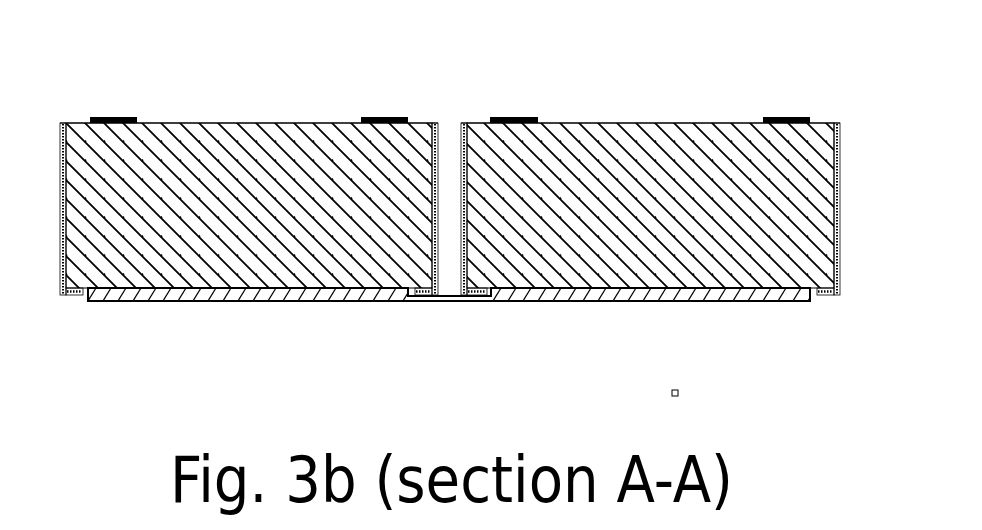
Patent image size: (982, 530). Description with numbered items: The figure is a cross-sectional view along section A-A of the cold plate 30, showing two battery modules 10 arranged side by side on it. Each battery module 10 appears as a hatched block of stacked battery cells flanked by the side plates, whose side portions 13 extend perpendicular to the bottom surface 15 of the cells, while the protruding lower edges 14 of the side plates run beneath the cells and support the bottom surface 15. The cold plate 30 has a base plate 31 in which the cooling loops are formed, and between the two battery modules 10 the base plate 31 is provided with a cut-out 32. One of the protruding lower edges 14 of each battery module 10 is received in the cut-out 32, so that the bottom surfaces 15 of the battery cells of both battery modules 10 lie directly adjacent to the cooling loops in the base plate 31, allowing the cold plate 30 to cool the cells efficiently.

The battery module 10 is at (482, 112).
The side portion 13 is at (61, 255).
The protruding lower edge 14 is at (70, 295).
The bottom surface 15 is at (240, 287).
The cold plate 30 is at (108, 46).
The base plate 31 is at (263, 302).
The cut-out 32 is at (451, 318).